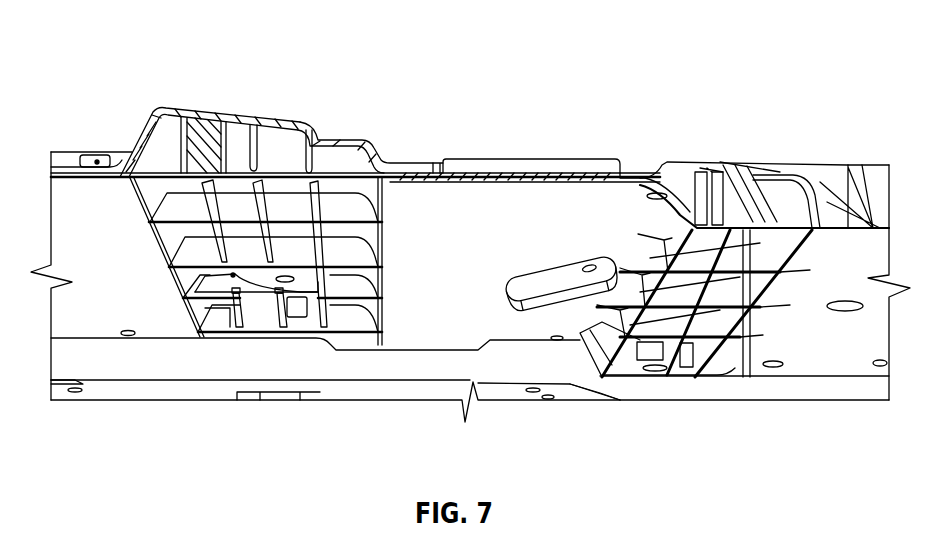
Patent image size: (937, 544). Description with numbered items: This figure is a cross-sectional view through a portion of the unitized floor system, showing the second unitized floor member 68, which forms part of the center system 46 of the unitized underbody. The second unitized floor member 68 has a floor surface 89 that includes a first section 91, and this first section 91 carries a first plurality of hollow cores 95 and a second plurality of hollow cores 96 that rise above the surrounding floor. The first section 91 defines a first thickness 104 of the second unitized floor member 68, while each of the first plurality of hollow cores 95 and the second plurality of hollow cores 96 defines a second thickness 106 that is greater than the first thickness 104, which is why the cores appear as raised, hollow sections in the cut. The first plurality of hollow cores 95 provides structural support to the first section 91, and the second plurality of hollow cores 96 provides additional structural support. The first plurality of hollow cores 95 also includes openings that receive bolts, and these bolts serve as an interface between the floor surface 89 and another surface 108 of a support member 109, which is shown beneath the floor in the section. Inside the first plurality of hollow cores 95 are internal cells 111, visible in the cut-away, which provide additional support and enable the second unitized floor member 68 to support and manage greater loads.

The center system 46 is at (737, 411).
The second unitized floor member 68 is at (813, 88).
The floor surface 89 is at (592, 127).
The first section 91 is at (520, 168).
The first plurality of hollow cores 95 is at (155, 103).
The second plurality of hollow cores 96 is at (717, 155).
The first thickness 104 is at (77, 167).
The second thickness 106 is at (380, 153).
The another surface 108 is at (130, 336).
The support member 109 is at (200, 112).
The internal cells 111 is at (270, 148).